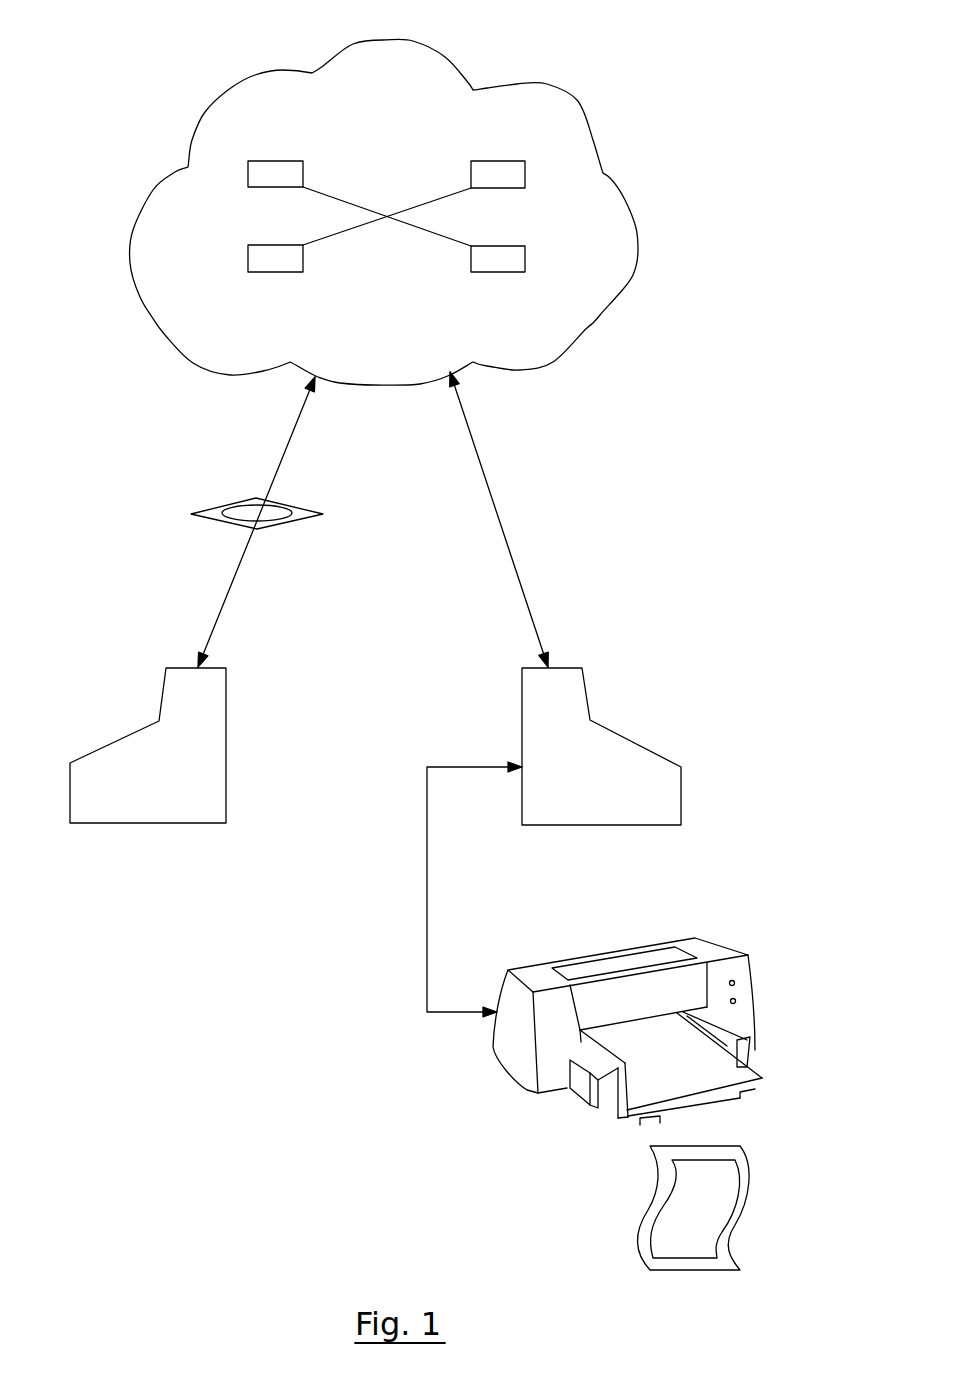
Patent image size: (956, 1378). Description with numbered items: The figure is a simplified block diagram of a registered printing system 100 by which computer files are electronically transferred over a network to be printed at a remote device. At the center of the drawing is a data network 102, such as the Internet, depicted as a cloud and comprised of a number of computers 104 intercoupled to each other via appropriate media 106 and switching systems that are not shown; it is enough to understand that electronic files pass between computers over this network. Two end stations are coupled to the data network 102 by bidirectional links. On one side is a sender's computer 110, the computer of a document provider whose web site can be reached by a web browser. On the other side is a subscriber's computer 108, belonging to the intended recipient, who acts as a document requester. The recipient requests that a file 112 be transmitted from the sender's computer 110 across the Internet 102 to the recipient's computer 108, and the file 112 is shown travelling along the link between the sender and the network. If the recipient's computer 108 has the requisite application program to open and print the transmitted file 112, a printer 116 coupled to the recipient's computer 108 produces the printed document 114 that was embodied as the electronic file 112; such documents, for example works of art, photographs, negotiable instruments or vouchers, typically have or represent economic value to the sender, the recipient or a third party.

The registered printing system 100 is at (94, 68).
The data network 102 is at (407, 92).
The computers 104 is at (275, 160).
The media 106 is at (365, 225).
The subscriber's computer 108 is at (638, 740).
The sender's computer 110 is at (112, 739).
The file 112 is at (259, 535).
The document 114 is at (743, 1177).
The printer 116 is at (740, 970).